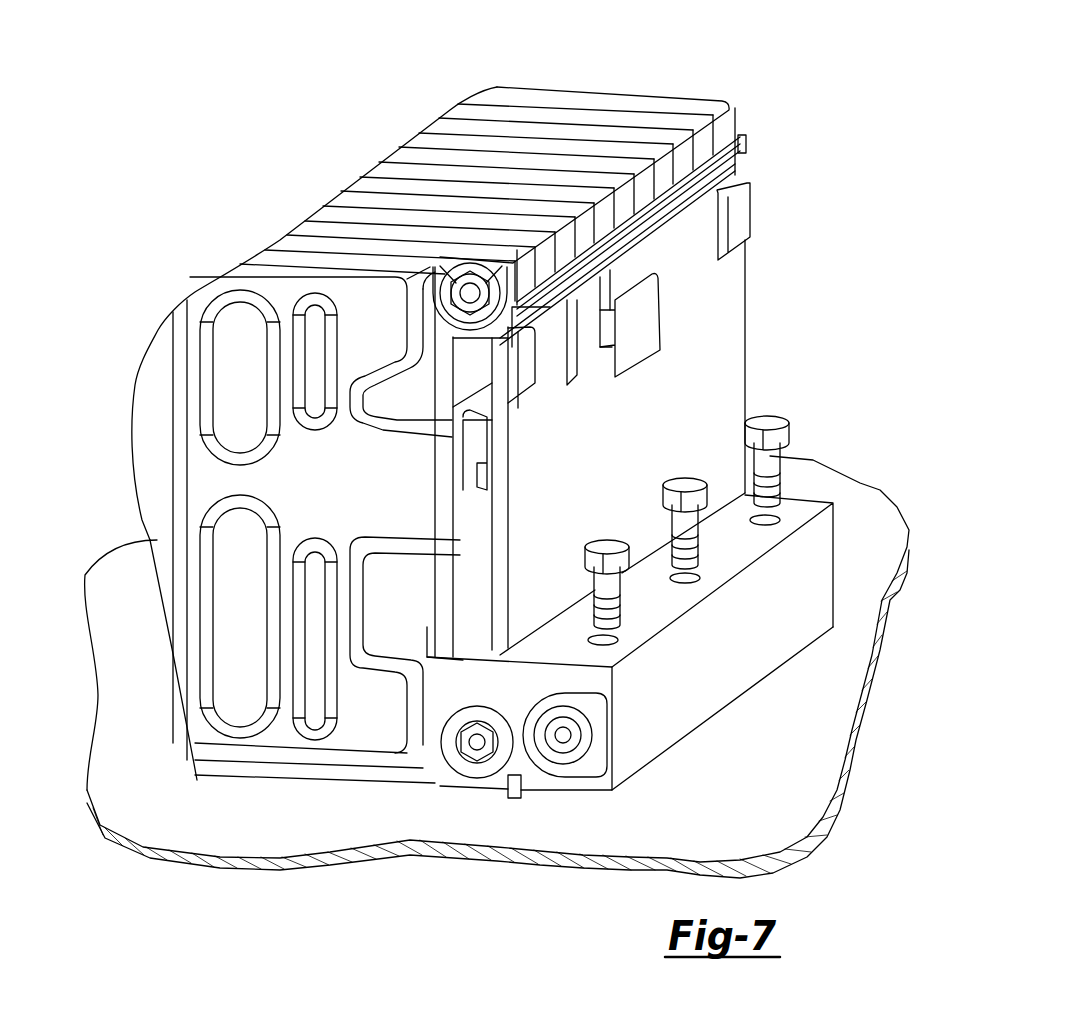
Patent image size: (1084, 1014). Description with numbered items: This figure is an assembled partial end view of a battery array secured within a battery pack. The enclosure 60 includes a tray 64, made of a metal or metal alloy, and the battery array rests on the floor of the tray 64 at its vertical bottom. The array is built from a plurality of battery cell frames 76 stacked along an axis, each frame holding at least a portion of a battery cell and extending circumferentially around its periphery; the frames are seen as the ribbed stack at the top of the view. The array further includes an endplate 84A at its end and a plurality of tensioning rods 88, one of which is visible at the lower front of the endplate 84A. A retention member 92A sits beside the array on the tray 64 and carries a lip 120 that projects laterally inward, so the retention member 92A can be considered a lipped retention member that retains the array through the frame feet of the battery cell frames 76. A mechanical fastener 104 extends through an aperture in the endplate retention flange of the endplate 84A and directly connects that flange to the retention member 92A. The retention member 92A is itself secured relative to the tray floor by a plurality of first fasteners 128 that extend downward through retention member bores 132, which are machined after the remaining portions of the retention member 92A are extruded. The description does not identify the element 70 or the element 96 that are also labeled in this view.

The enclosure 60 is at (167, 806).
The tray 64 is at (237, 816).
The housing 70 is at (278, 824).
The battery cell frames 76 is at (672, 122).
The endplate 84A is at (240, 383).
The tensioning rods 88 is at (477, 742).
The retention member 92A is at (713, 547).
The housing flange 96 is at (350, 805).
The mechanical fastener 104 is at (563, 735).
The lip 120 is at (525, 640).
The first fasteners 128 is at (768, 424).
The retention member bores 132 is at (768, 520).